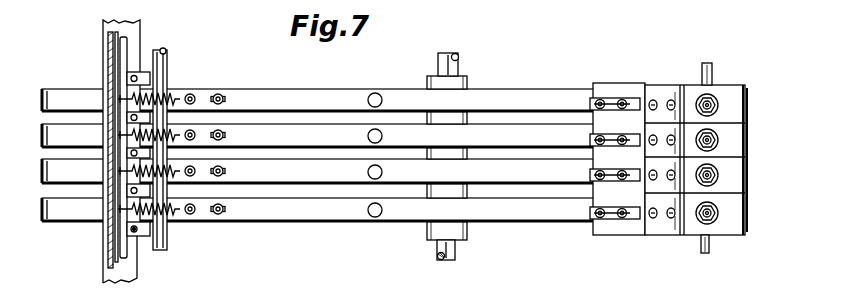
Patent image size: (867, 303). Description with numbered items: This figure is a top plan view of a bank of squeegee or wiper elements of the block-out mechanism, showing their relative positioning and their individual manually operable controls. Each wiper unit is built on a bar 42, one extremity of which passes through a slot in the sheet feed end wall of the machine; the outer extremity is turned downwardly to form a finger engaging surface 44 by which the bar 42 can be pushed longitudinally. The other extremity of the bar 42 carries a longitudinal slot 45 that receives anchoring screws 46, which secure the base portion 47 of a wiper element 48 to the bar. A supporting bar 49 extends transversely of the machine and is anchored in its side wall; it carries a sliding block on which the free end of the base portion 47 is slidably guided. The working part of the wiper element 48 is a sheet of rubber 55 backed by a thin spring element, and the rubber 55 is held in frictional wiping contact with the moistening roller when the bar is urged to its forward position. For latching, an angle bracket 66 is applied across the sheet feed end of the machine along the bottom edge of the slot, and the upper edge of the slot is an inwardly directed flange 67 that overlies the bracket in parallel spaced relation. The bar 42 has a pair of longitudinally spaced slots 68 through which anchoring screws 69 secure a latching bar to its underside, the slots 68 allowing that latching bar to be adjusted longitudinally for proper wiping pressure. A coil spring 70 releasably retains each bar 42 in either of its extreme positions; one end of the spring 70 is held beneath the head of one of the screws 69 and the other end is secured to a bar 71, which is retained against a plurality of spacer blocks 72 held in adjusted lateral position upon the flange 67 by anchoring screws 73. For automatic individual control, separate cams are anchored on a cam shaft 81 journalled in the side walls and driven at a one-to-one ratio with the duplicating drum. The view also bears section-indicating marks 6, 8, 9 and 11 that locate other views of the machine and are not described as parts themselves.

The bar 6 is at (243, 172).
The section line 8- 8 is at (12, 219).
The section line 9- 9 is at (580, 238).
The section line 11- 11 is at (341, 116).
The bar 42 is at (511, 124).
The finger engaging surface 44 is at (42, 96).
The longitudinal slot 45 is at (646, 94).
The anchoring screws 46 is at (593, 126).
The base portion 47 is at (612, 87).
The wiper element 48 is at (744, 126).
The supporting bar 49 is at (704, 254).
The sheet of rubber 55 is at (752, 120).
The angle bracket 66 is at (103, 40).
The flange 67 is at (137, 48).
The slots 68 is at (210, 94).
The anchoring screws 69 is at (218, 128).
The coil spring 70 is at (172, 93).
The bar 71 is at (147, 299).
The spacer blocks 72 is at (148, 226).
The anchoring screws 73 is at (130, 228).
The cam shaft 81 is at (444, 264).